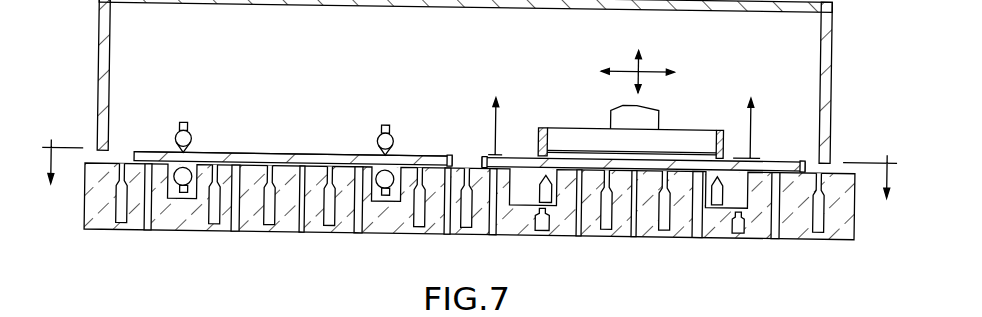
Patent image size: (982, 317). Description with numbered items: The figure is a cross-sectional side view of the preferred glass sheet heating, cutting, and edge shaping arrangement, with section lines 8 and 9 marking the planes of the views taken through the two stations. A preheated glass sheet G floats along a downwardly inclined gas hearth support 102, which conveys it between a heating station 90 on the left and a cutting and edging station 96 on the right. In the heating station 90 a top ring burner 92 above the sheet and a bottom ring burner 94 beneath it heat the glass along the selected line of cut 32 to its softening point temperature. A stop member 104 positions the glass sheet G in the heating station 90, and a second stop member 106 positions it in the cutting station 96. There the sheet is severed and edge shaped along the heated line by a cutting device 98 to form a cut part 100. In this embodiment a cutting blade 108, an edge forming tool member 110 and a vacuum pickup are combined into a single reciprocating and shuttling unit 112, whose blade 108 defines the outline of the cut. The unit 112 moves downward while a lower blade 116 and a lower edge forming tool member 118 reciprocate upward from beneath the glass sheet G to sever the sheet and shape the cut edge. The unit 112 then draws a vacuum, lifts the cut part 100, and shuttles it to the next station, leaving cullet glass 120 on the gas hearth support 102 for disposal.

The section line 8- 8 is at (469, 183).
The section line 9- 9 is at (624, 114).
The line of cut 32 is at (187, 149).
The heating station 90 is at (299, 66).
The top ring burner 92 is at (190, 127).
The bottom ring burner 94 is at (172, 151).
The cutting and edging station 96 is at (749, 42).
The cutting device 98 is at (537, 121).
The cut part 100 is at (605, 143).
The gas hearth support 102 is at (792, 229).
The stop member 104 is at (450, 150).
The stop member 106 is at (806, 153).
The cutting blade 108 is at (731, 108).
The edge forming tool member 110 is at (710, 147).
The reciprocating and shuttling unit 112 is at (660, 119).
The lower blade 116 is at (537, 186).
The edge forming tool member 118 is at (557, 188).
The cullet glass 120 is at (537, 152).
The glass sheet G is at (262, 150).